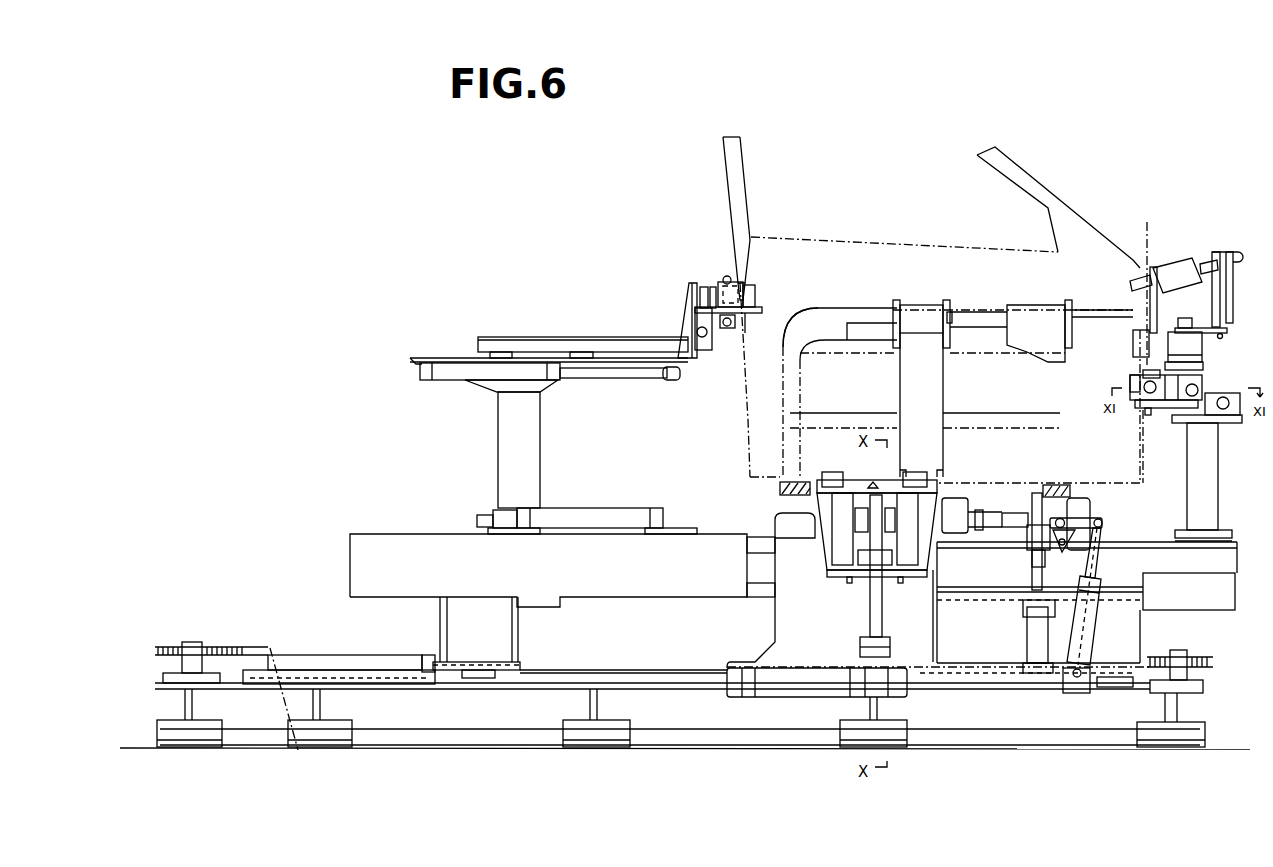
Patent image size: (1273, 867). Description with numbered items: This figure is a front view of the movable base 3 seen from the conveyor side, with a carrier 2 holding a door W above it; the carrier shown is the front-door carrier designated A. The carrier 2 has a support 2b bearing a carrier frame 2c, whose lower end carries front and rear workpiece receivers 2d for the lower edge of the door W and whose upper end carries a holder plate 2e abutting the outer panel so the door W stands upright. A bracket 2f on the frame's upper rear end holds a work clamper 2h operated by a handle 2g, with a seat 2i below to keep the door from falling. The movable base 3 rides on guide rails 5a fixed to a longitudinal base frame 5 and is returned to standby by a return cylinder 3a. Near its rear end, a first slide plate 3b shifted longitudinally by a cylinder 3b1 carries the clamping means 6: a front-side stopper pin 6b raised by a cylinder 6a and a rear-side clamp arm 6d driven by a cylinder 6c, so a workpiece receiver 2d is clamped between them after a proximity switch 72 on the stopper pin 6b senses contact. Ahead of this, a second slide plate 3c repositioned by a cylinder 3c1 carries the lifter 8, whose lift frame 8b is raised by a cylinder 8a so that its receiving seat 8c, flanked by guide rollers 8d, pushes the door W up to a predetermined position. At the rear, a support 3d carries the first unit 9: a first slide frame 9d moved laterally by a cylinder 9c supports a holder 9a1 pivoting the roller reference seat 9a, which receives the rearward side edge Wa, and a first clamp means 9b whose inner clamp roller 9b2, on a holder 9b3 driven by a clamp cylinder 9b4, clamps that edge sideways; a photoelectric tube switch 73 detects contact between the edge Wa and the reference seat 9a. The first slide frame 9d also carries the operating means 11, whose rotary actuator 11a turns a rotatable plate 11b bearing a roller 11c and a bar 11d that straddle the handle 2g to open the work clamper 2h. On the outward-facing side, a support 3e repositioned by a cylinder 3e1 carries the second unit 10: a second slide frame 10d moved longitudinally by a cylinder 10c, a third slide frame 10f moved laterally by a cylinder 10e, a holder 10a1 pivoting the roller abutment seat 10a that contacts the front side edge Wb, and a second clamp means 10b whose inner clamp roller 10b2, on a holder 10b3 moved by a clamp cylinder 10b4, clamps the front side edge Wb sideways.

The carrier 2 is at (872, 305).
The support 2b is at (947, 370).
The carrier frame 2c is at (796, 358).
The workpiece receivers 2d is at (786, 479).
The holder plate 2e is at (872, 350).
The bracket 2f is at (1175, 268).
The handle 2g is at (1238, 254).
The work clamper 2h is at (1132, 280).
The seat 2i is at (1135, 342).
The movable base 3 is at (712, 544).
The return cylinder 3a is at (342, 658).
The first slide plate 3b is at (1021, 634).
The cylinder 3b1 is at (950, 546).
The second slide plate 3c is at (775, 627).
The cylinder 3c1 is at (813, 680).
The support 3d is at (1213, 473).
The support 3e is at (546, 438).
The cylinder 3e1 is at (605, 510).
The base frame 5 is at (701, 728).
The guide rails 5a is at (656, 698).
The clamping means 6 is at (1103, 514).
The cylinder 6a is at (1028, 653).
The front-side stopper pin 6b is at (1037, 491).
The cylinder 6c is at (1098, 633).
The rear-side clamp arm 6d is at (1080, 497).
The proximity switch 72 is at (1015, 510).
The photoelectric tube switch 73 is at (1141, 422).
The lifter 8 is at (950, 463).
The cylinder 8a is at (868, 608).
The lift frame 8b is at (826, 552).
The receiving seat 8c is at (859, 481).
The guide rollers 8d is at (832, 470).
The first unit 9 is at (1135, 418).
The reference seat 9a is at (1146, 370).
The holder 9a1 is at (1190, 359).
The first clamp means 9b is at (1137, 375).
The inner clamp roller 9b2 is at (1130, 378).
The holder 9b3 is at (1140, 414).
The clamp cylinder 9b4 is at (1198, 386).
The cylinder 9c is at (1235, 394).
The first slide frame 9d is at (1172, 423).
The second unit 10 is at (684, 288).
The abutment seat 10a is at (739, 280).
The holder 10a1 is at (724, 278).
The second clamp means 10b is at (747, 280).
The inner clamp roller 10b2 is at (755, 278).
The holder 10b3 is at (762, 305).
The clamp cylinder 10b4 is at (722, 328).
The cylinder 10c is at (460, 380).
The second slide frame 10d is at (680, 340).
The cylinder 10e is at (702, 350).
The third slide frame 10f is at (764, 330).
The operating means 11 is at (1153, 322).
The rotary actuator 11a is at (1176, 325).
The rotatable plate 11b is at (1223, 325).
The roller 11c is at (1235, 287).
The bar 11d is at (1242, 256).
The carrier for the front door A is at (969, 304).
The door W is at (1069, 183).
The rearward side edge Wa is at (1144, 282).
The front side edge Wb is at (715, 168).